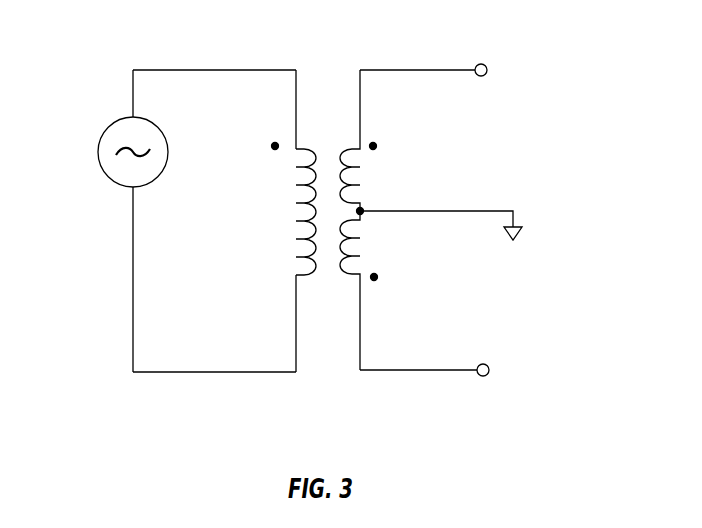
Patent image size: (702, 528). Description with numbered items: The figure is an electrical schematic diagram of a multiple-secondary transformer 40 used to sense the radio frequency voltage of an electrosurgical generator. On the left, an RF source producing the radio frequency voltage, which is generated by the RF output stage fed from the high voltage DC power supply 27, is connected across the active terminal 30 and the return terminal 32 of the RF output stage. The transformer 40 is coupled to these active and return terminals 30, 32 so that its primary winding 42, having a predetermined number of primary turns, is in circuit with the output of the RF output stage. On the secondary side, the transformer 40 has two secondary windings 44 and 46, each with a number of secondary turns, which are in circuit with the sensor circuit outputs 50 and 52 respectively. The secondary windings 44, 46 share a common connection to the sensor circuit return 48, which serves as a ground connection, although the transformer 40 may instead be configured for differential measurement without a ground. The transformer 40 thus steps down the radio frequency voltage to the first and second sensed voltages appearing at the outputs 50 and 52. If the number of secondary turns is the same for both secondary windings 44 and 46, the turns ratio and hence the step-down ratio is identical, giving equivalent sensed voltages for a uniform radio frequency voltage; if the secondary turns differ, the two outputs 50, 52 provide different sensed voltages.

The high voltage DC power supply 27 is at (100, 153).
The active terminal 30 is at (192, 70).
The return terminal 32 is at (193, 374).
The transformer 40 is at (333, 53).
The primary winding 42 is at (285, 195).
The secondary winding 44 is at (383, 153).
The secondary winding 46 is at (384, 268).
The sensor circuit return 48 is at (524, 244).
The sensor circuit output 50 is at (487, 55).
The sensor circuit output 52 is at (491, 359).